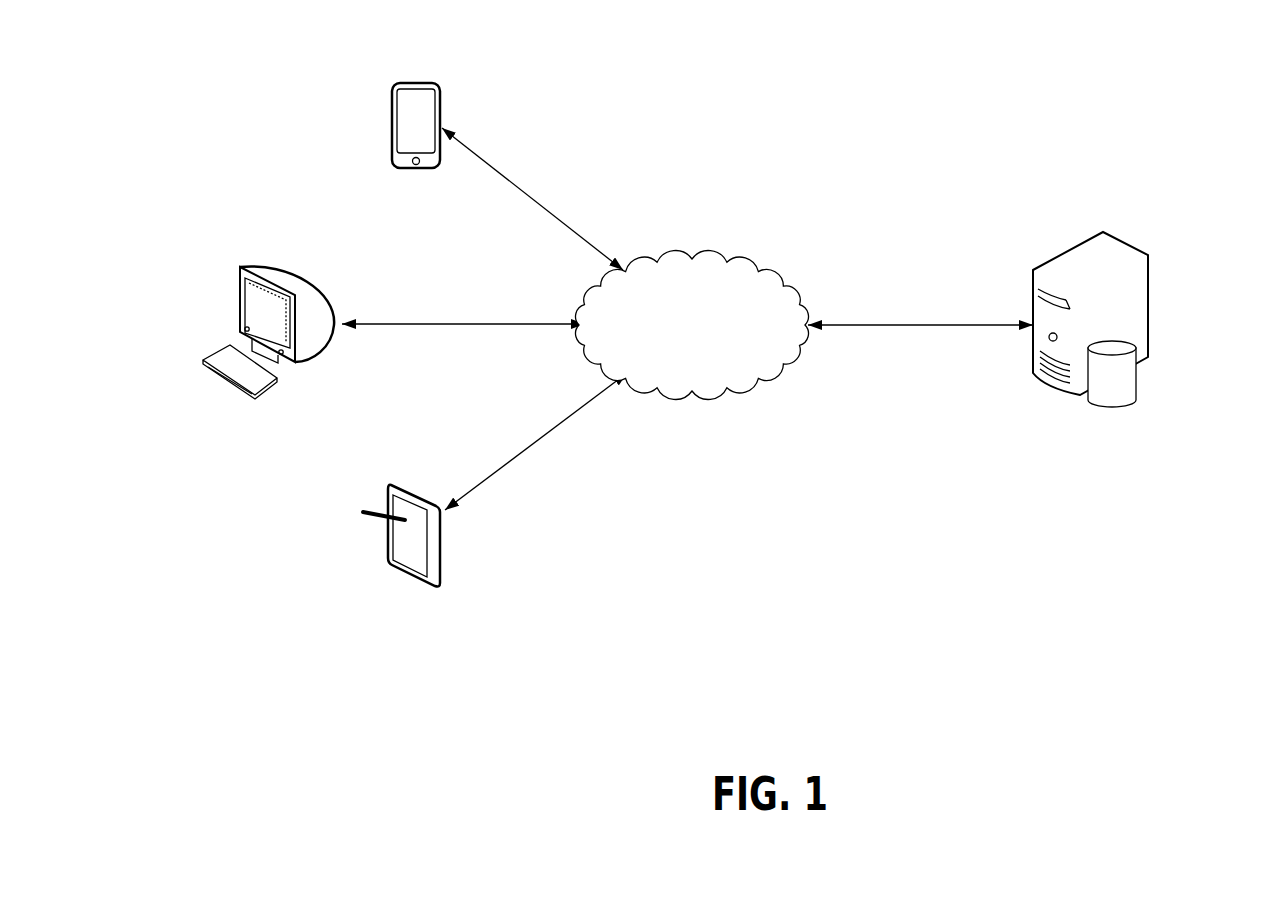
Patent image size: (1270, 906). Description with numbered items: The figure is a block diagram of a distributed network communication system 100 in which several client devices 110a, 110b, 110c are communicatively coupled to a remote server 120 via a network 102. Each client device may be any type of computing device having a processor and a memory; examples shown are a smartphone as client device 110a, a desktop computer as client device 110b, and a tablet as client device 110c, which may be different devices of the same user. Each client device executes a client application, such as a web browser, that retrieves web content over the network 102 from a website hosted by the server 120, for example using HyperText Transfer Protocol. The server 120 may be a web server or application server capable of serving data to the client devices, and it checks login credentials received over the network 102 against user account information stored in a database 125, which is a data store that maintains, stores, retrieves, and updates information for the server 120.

The distributed network communication system 100 is at (1180, 60).
The network 102 is at (733, 262).
The client device 110a is at (417, 83).
The client device 110b is at (307, 278).
The client device 110c is at (428, 586).
The remote server 120 is at (1132, 243).
The database 125 is at (1118, 413).